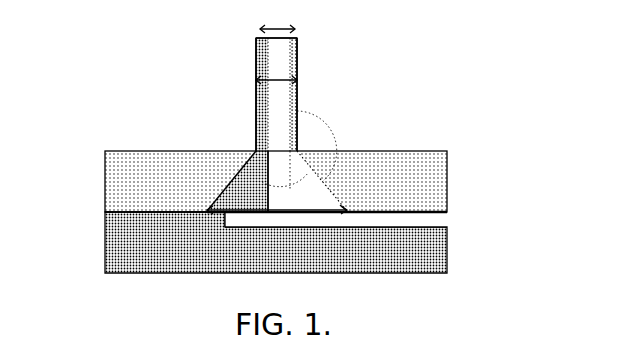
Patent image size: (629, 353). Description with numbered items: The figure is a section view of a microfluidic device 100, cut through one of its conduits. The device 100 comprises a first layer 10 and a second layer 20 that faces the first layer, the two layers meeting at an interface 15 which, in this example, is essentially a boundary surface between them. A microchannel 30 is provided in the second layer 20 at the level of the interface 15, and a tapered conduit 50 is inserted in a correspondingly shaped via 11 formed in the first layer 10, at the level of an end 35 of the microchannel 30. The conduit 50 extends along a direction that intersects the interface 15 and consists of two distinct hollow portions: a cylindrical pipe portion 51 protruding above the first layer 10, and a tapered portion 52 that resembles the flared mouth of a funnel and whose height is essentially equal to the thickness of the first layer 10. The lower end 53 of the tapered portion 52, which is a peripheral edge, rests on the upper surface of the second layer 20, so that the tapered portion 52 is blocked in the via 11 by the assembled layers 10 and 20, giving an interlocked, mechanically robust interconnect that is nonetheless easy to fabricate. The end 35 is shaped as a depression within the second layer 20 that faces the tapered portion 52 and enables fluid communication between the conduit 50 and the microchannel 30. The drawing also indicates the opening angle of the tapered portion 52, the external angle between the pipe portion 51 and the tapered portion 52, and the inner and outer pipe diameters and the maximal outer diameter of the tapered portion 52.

The first layer 10 is at (117, 180).
The via 11 is at (240, 167).
The interface 15 is at (110, 213).
The second layer 20 is at (113, 257).
The microchannel 30 is at (437, 218).
The end of microchannel 35 is at (282, 222).
The tapered conduit 50 is at (365, 94).
The pipe portion 51 is at (302, 63).
The tapered portion 52 is at (330, 202).
The lower end 53 is at (350, 209).
The microfluidic device 100 is at (319, 163).